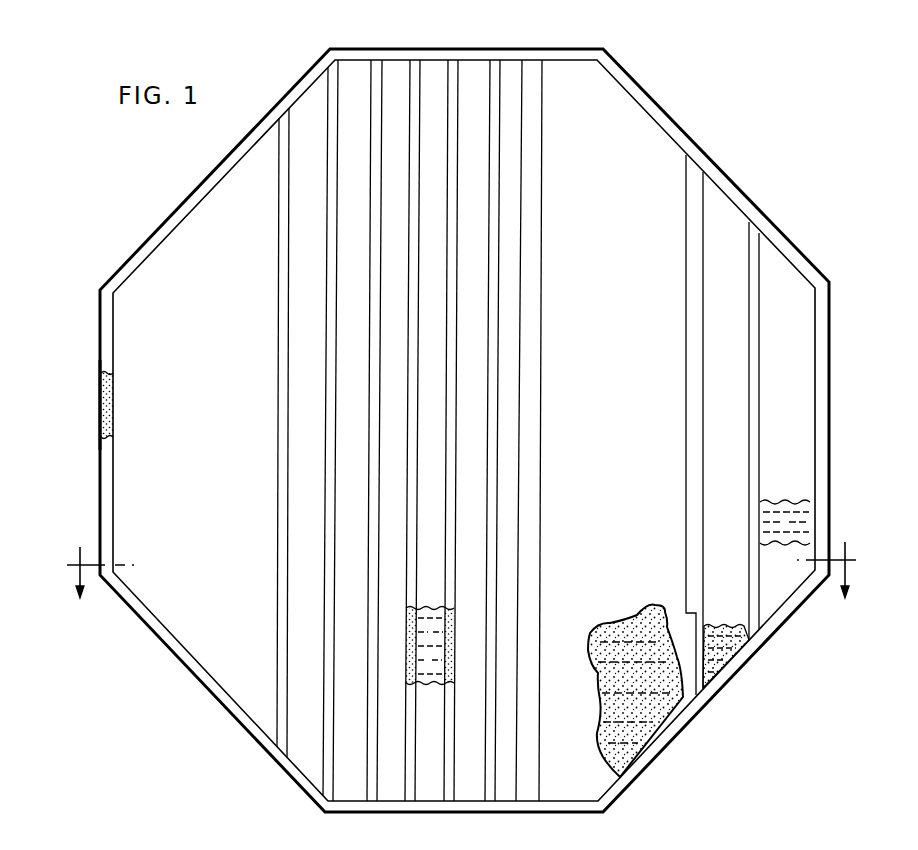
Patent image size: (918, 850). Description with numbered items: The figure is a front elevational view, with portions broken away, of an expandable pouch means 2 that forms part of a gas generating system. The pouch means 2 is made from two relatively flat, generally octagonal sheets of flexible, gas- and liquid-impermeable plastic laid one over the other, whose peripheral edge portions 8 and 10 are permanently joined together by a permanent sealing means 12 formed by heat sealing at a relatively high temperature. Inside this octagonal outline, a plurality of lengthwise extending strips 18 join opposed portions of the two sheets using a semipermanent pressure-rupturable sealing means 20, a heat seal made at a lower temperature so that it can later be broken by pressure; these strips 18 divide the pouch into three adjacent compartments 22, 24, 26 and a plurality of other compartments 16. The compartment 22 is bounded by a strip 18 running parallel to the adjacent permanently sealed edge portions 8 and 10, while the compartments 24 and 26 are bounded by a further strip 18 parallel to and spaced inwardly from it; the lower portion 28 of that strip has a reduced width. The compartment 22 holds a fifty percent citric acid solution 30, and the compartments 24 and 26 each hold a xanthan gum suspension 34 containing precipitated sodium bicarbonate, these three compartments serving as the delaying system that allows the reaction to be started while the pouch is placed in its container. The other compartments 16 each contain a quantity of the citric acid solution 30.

The expandable pouch means 2 is at (838, 708).
The peripheral edge portion 8 is at (158, 637).
The peripheral edge portion 10 is at (102, 425).
The permanent sealing means 12 is at (92, 395).
The other compartments 16 is at (242, 172).
The lengthwise extending strip 18 is at (320, 504).
The semipermanent pressure-rupturable sealing means 20 is at (410, 675).
The compartment 22 is at (787, 405).
The compartment 24 is at (726, 400).
The compartment 26 is at (615, 365).
The lower portion 28 is at (700, 636).
The citric acid solution 30 is at (425, 628).
The gum suspension 34 is at (630, 633).